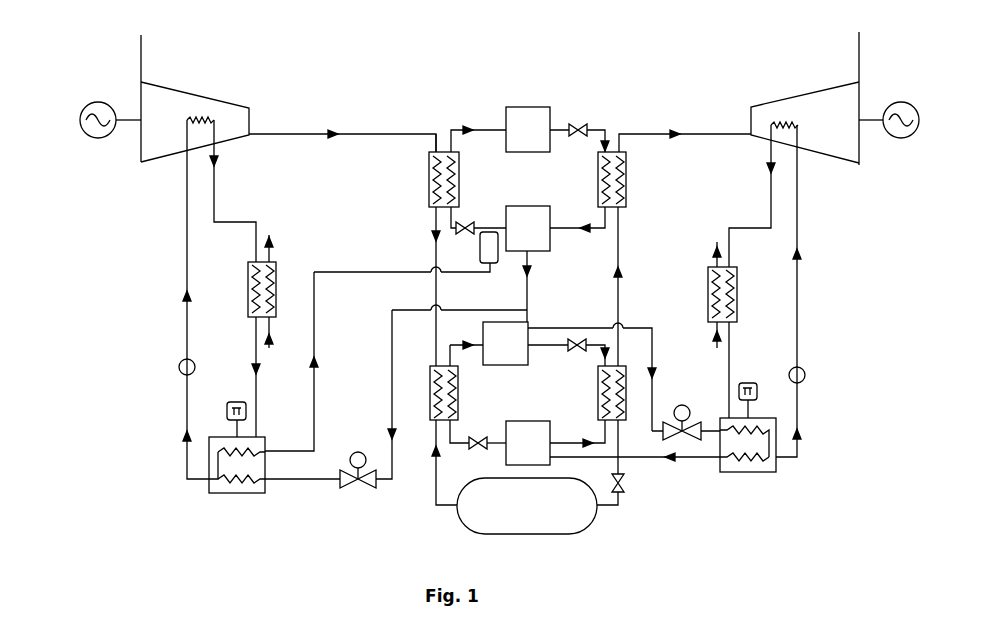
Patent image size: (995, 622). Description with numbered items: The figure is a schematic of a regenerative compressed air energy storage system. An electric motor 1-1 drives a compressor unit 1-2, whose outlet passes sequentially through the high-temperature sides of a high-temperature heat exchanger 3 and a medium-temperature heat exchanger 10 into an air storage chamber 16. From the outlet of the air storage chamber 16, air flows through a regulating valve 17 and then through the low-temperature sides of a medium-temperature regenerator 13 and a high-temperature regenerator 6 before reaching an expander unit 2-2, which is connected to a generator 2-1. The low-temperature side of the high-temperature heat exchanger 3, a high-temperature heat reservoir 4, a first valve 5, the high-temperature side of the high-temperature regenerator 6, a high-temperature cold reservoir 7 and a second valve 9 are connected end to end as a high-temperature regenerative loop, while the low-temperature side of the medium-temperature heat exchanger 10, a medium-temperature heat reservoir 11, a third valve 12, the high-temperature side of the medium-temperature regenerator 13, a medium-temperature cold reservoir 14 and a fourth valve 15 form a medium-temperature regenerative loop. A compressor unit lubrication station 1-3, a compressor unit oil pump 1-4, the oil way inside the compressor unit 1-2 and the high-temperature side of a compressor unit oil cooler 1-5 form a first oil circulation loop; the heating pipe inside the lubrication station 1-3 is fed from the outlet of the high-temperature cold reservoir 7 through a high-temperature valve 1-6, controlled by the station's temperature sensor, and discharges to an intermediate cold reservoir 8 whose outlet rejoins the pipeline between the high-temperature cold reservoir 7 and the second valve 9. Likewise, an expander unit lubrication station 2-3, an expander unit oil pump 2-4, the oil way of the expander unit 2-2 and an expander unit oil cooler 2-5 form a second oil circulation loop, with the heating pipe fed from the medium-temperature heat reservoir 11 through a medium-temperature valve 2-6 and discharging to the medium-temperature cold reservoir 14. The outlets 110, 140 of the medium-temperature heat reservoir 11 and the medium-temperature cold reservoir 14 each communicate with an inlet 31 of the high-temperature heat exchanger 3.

The electric motor 1-1 is at (92, 105).
The compressor unit 1-2 is at (193, 92).
The compressor unit lubrication station 1-3 is at (237, 493).
The compressor unit oil pump 1-4 is at (180, 362).
The compressor unit oil cooler 1-5 is at (276, 262).
The high-temperature valve 1-6 is at (352, 490).
The generator 2-1 is at (902, 103).
The expander unit 2-2 is at (800, 91).
The expander unit lubrication station 2-3 is at (750, 472).
The expander unit oil pump 2-4 is at (803, 368).
The expander unit oil cooler 2-5 is at (708, 265).
The medium-temperature valve 2-6 is at (684, 405).
The high-temperature heat exchanger 3 is at (429, 177).
The inlet of high-temperature heat exchanger 31 is at (436, 150).
The high-temperature heat reservoir 4 is at (526, 106).
The first valve 5 is at (581, 125).
The high-temperature regenerator 6 is at (626, 178).
The high-temperature cold reservoir 7 is at (532, 206).
The intermediate cold reservoir 8 is at (498, 263).
The second valve 9 is at (468, 225).
The medium-temperature heat exchanger 10 is at (430, 402).
The medium-temperature heat reservoir 11 is at (528, 320).
The outlet of the medium-temperature heat reservoir 110 is at (528, 348).
The third valve 12 is at (577, 352).
The medium-temperature regenerator 13 is at (598, 397).
The medium-temperature cold reservoir 14 is at (523, 421).
The outlet of medium-temperature cold reservoir 140 is at (506, 446).
The fourth valve 15 is at (475, 437).
The air storage chamber 16 is at (528, 535).
The regulating valve 17 is at (624, 486).